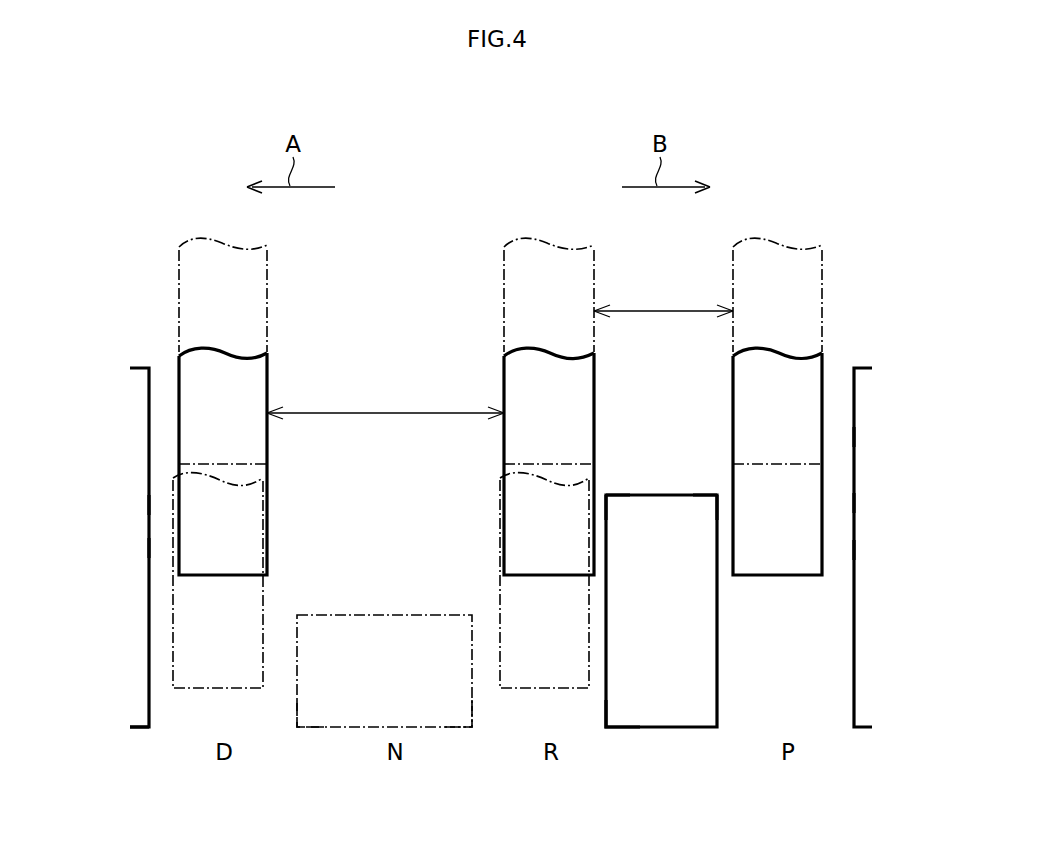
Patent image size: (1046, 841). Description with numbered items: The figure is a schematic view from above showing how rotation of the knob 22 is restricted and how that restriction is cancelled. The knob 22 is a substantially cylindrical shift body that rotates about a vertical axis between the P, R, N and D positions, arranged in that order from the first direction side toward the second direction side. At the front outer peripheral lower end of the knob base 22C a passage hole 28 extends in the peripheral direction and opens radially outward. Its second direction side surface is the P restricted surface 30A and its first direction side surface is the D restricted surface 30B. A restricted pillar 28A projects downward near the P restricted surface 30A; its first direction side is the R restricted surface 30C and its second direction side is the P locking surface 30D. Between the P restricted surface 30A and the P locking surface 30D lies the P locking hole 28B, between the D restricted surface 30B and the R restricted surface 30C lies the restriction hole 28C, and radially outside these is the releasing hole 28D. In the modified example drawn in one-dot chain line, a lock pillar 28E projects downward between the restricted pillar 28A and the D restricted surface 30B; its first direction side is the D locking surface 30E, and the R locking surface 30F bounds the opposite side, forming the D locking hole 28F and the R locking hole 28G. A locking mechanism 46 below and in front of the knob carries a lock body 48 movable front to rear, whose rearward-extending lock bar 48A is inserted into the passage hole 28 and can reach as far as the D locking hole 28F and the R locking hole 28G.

The knob 22 is at (114, 504).
The knob base 22C is at (147, 367).
The passage hole 28 is at (854, 380).
The restricted pillar 28A is at (657, 494).
The P locking hole 28B is at (852, 525).
The restriction hole 28C is at (148, 518).
The releasing hole 28D is at (852, 445).
The lock pillar 28E is at (378, 613).
The D locking hole 28F is at (148, 703).
The R locking hole 28G is at (606, 705).
The P restricted surface 30A is at (852, 558).
The D restricted surface 30B is at (148, 558).
The R restricted surface 30C is at (606, 508).
The P locking surface 30D is at (717, 508).
The D locking surface 30E is at (297, 705).
The R locking surface 30F is at (472, 705).
The locking mechanism 46 is at (267, 452).
The lock body 48 is at (552, 425).
The lock bar 48A is at (267, 369).